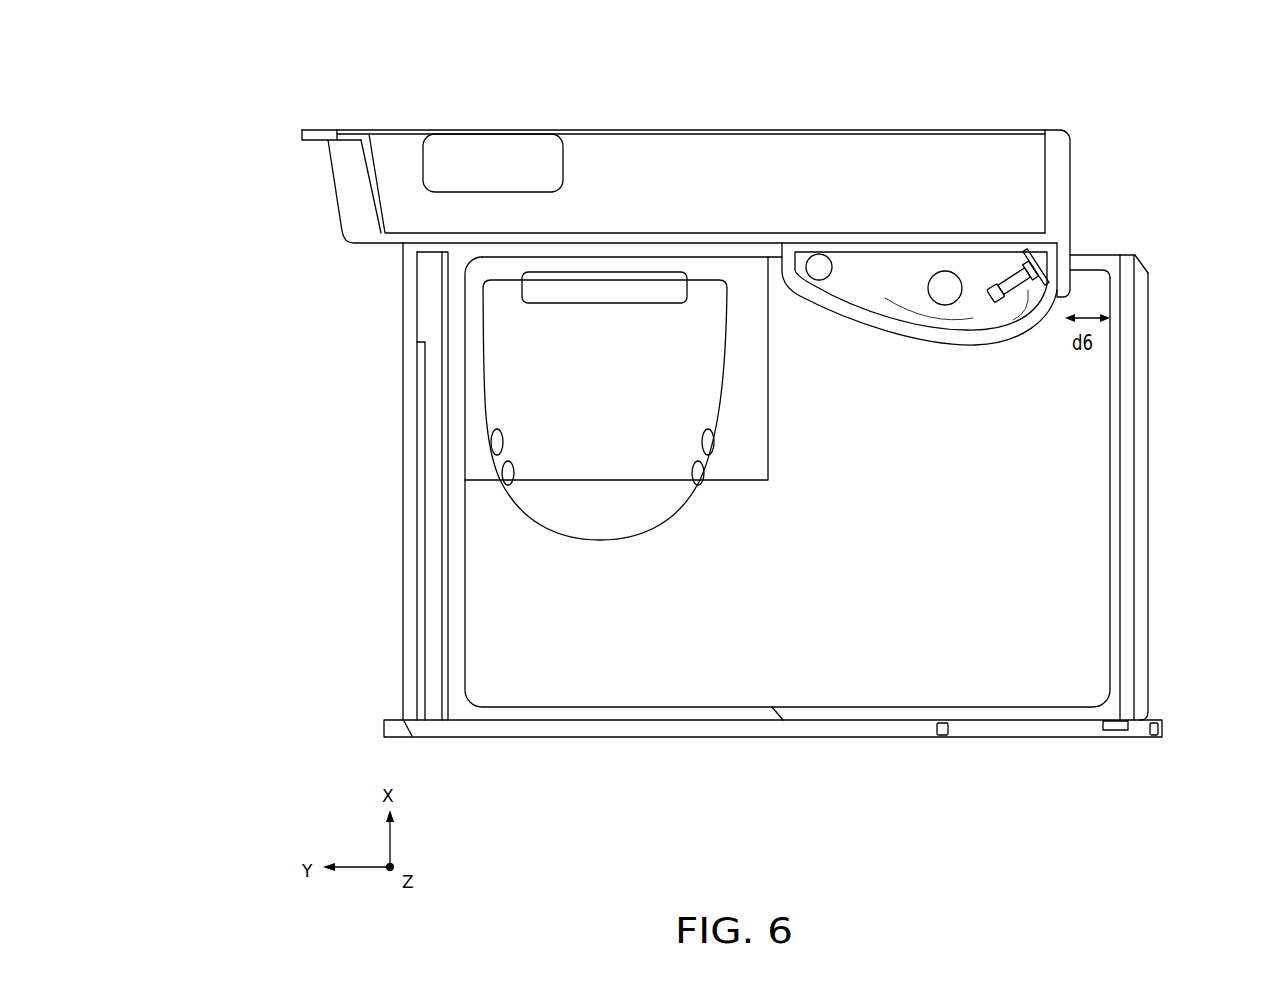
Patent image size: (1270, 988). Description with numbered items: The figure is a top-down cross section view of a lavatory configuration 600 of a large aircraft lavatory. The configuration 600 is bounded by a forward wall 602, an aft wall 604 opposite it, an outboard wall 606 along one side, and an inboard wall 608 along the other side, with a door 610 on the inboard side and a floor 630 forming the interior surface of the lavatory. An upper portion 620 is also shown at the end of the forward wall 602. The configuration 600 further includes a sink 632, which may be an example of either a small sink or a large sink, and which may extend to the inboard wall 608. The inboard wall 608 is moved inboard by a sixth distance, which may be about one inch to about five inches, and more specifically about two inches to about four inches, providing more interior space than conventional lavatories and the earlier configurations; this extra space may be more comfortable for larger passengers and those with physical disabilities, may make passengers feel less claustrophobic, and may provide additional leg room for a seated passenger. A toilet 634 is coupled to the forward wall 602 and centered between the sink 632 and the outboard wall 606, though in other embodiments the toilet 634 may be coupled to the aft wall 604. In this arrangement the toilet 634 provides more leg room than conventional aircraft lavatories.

The lavatory configuration 600 is at (212, 186).
The forward wall 602 is at (791, 110).
The aft wall 604 is at (770, 733).
The outboard wall 606 is at (410, 418).
The inboard wall 608 is at (1150, 272).
The door 610 is at (1148, 507).
The upper portion 620 is at (1022, 138).
The floor 630 is at (867, 588).
The sink 632 is at (903, 330).
The toilet 634 is at (700, 438).